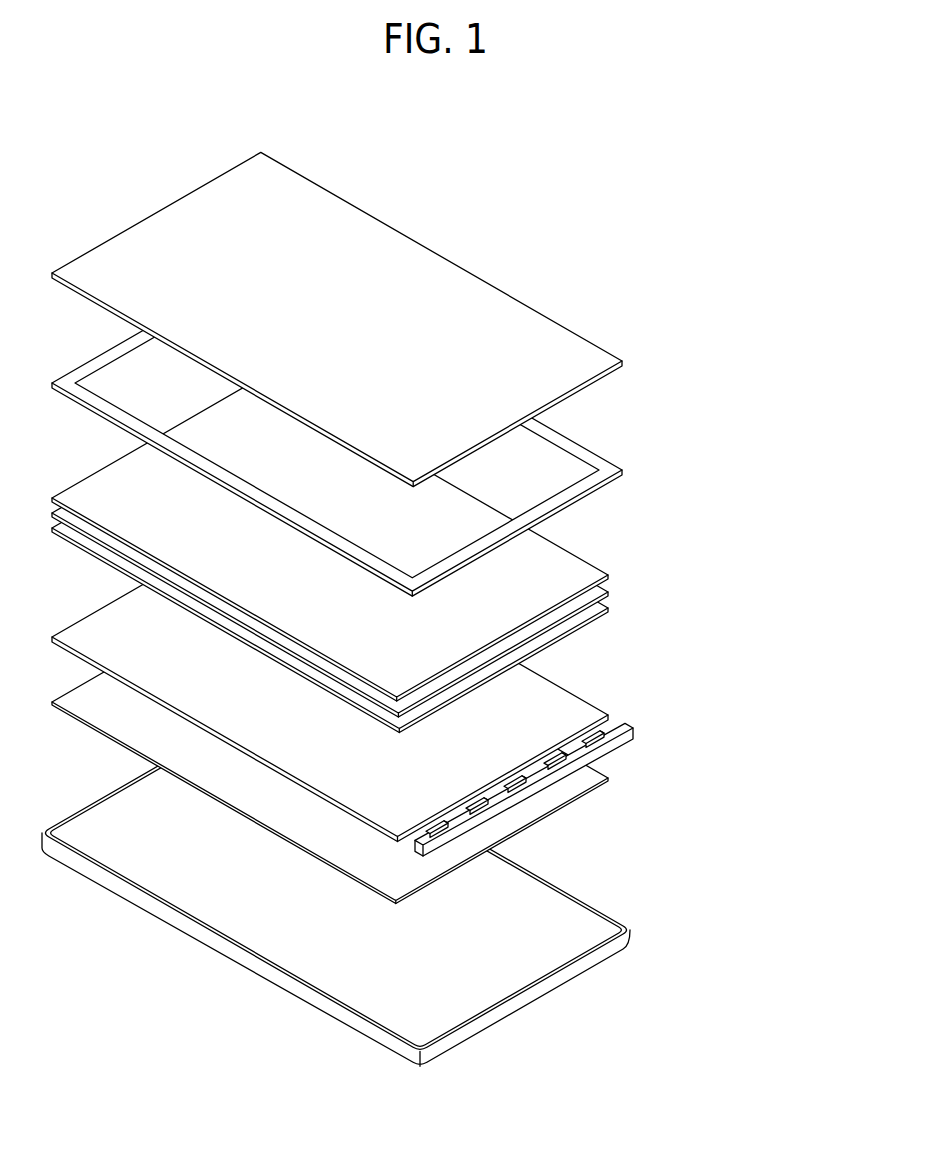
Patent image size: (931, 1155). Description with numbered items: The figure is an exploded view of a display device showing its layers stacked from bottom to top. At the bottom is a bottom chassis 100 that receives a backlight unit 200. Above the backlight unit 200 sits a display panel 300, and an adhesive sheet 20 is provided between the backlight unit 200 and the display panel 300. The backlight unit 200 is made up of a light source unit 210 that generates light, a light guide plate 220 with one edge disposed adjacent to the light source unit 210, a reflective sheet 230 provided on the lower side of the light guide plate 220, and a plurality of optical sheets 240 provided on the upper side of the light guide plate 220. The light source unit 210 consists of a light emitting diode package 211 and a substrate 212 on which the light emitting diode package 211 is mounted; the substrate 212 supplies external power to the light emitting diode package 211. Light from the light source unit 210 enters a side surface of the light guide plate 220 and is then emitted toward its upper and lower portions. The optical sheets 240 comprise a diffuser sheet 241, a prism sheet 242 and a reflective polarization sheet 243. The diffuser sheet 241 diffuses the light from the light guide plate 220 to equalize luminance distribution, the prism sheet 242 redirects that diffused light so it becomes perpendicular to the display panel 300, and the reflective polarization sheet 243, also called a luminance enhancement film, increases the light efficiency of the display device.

The bottom chassis 100 is at (552, 980).
The backlight unit 200 is at (440, 640).
The light source unit 210 is at (593, 779).
The light emitting diode (LED) package 211 is at (612, 722).
The substrate 212 is at (617, 743).
The light guide plate 220 is at (568, 707).
The reflective sheet 230 is at (552, 797).
The optical sheets 240 is at (402, 554).
The diffuser sheet 241 is at (602, 603).
The prism sheet 242 is at (602, 586).
The reflective polarization sheet 243 is at (590, 572).
The adhesive sheet 20 is at (612, 467).
The display panel 300 is at (590, 361).